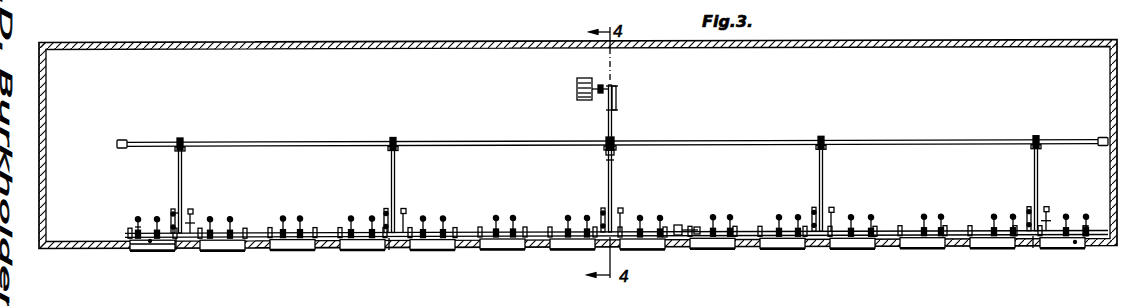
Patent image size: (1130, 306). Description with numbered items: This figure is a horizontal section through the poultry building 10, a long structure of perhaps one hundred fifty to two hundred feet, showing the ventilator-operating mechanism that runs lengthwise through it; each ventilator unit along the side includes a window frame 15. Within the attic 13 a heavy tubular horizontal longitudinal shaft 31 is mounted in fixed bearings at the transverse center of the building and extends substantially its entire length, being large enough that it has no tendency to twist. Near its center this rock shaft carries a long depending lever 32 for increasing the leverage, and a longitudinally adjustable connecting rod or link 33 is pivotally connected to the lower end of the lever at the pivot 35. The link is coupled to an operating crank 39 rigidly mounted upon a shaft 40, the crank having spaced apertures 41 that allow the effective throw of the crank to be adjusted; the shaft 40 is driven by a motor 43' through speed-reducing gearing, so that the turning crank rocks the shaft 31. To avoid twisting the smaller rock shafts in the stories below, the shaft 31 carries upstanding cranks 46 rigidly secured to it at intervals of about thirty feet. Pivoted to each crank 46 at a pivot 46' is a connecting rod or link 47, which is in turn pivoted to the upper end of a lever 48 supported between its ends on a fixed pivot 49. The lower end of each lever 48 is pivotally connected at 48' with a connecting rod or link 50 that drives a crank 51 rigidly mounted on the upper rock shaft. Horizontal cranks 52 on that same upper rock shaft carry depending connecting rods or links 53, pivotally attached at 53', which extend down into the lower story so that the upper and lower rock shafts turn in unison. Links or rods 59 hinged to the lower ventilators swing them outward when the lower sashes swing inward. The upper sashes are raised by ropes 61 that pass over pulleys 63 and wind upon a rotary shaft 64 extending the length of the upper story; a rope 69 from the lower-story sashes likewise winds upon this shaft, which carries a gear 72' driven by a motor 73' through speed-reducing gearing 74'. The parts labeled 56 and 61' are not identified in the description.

The poultry building 10 is at (35, 95).
The attic 13 is at (58, 83).
The window frame 15 is at (158, 252).
The horizontal longitudinal shaft 31 is at (642, 141).
The depending lever 32 is at (606, 152).
The connecting rod or link 33 is at (617, 108).
The pivotal connection 35 is at (612, 158).
The operating crank 39 is at (617, 95).
The shaft 40 is at (604, 89).
The spaced apertures 41 is at (600, 87).
The motor 43' is at (567, 90).
The upstanding cranks 46 is at (619, 129).
The pivot 46' is at (592, 135).
The connecting rod or link 47 is at (182, 168).
The lever 48 is at (584, 210).
The pivotal connection 48' is at (160, 196).
The fixed pivot 49 is at (171, 223).
The connecting rod or link 50 is at (178, 241).
The crank 51 is at (176, 241).
The horizontal cranks 52 is at (191, 209).
The depending connecting rod or link 53 is at (635, 206).
The pivotal connection 53' is at (634, 212).
The rail 56 is at (170, 240).
The links or rods 59 is at (137, 245).
The flexible elements or ropes 61 is at (536, 212).
The end pin 61' is at (1094, 213).
The pulleys 63 is at (285, 220).
The rotary shaft 64 is at (136, 229).
The rope 69 is at (150, 242).
The gear 72' is at (701, 218).
The motor 73' is at (695, 203).
The speed-reducing gearing 74' is at (695, 212).